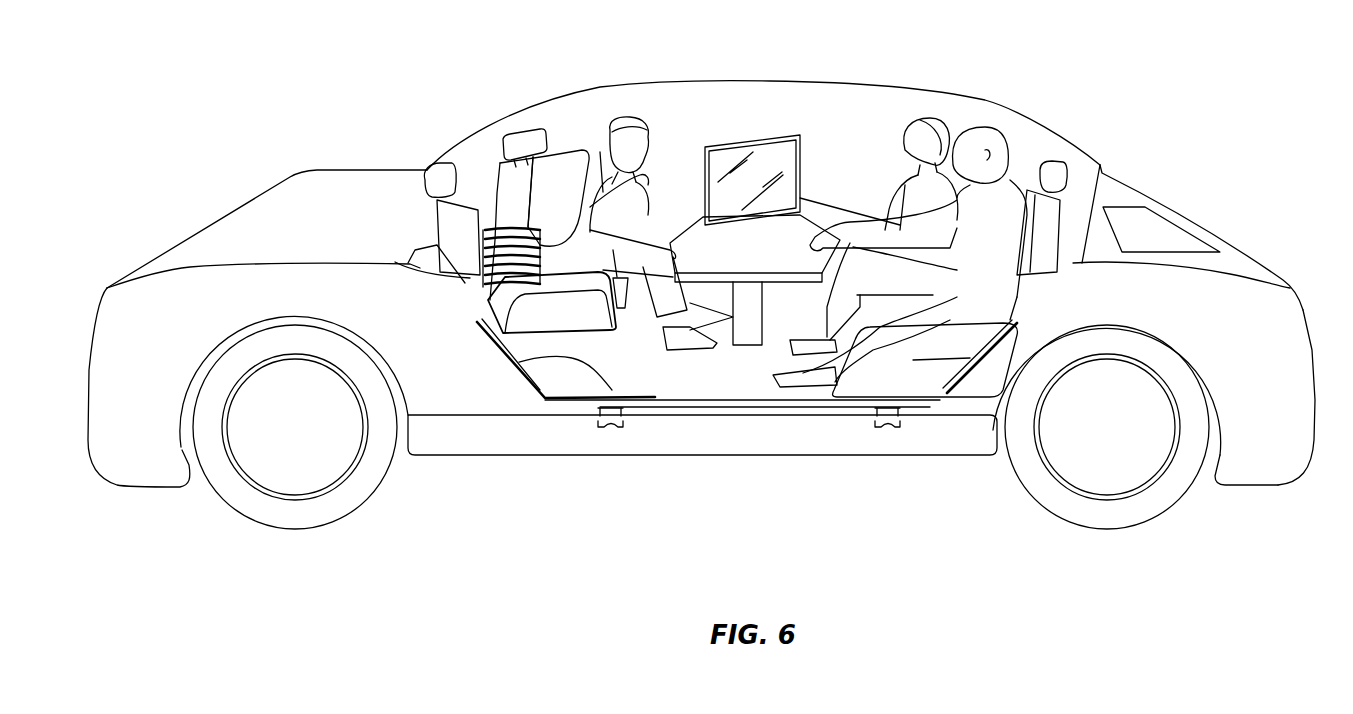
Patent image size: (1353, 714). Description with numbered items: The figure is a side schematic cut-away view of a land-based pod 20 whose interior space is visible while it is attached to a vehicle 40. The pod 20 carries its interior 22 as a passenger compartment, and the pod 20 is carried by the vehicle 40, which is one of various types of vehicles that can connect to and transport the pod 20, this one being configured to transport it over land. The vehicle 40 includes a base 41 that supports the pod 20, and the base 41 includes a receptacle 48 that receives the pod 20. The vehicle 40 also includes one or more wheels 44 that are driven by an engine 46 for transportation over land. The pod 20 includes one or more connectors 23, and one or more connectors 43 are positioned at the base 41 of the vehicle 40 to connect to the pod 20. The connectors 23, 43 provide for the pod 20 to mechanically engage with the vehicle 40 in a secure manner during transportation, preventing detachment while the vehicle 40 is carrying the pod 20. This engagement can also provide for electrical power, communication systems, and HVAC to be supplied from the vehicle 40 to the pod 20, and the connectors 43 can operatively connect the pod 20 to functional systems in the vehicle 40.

The pod 20 is at (997, 100).
The passenger cabin 22 is at (852, 133).
The connector 23 is at (620, 410).
The vehicle 40 is at (1248, 485).
The base 41 is at (458, 415).
The connector 43 is at (607, 427).
The wheel 44 is at (1138, 500).
The engine 46 is at (1145, 228).
The receptacle 48 is at (972, 393).